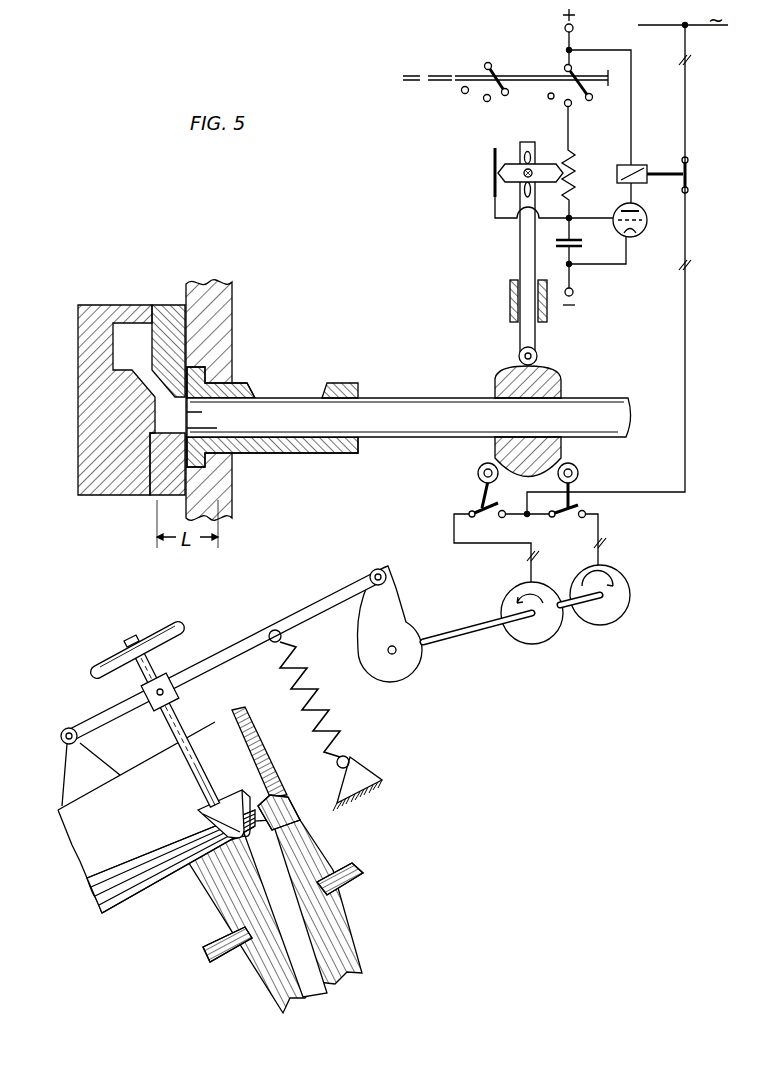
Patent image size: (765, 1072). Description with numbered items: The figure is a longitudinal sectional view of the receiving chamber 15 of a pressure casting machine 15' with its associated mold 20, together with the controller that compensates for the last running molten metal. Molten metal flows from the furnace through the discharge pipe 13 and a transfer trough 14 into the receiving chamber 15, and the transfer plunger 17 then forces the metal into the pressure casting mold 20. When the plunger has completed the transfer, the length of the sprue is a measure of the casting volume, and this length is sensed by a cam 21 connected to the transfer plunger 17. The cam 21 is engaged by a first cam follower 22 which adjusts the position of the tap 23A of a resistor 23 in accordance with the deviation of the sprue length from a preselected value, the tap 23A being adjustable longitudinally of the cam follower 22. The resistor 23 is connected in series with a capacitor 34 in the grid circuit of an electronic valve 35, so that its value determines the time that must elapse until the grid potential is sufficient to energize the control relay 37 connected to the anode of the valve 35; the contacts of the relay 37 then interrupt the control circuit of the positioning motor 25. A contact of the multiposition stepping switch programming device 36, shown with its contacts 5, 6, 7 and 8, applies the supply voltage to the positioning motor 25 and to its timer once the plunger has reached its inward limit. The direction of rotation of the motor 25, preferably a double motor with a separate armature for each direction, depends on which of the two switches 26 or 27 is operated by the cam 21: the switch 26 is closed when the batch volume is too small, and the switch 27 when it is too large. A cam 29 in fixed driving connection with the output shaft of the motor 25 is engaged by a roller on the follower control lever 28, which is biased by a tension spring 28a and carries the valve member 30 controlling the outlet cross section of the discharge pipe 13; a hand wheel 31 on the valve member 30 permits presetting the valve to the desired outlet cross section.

The pressure casting mold 20 is at (99, 325).
The pressure casting machine 15' is at (234, 394).
The receiving chamber 15 is at (340, 371).
The transfer plunger 17 is at (377, 420).
The cam 21 is at (546, 368).
The cam follower 22 is at (520, 252).
The tap 23A is at (512, 168).
The resistor 23 is at (582, 162).
The multiposition stepping switch programming device 36 is at (520, 76).
The control relay 37 is at (652, 168).
The electronic valve 35 is at (645, 212).
The capacitor 34 is at (582, 261).
The switch 26 is at (477, 469).
The switch 27 is at (579, 467).
The positioning motor 25 is at (588, 613).
The cam 29 is at (398, 670).
The follower control lever 28 is at (227, 655).
The tension spring 28a is at (338, 708).
The hand wheel 31 is at (162, 636).
The valve member 30 is at (198, 818).
The transfer trough 14 is at (134, 884).
The discharge pipe 13 is at (312, 957).
The switch contact 5 is at (596, 94).
The switch contact 6 is at (576, 106).
The switch contact 7 is at (546, 96).
The switch contact 8 is at (570, 75).